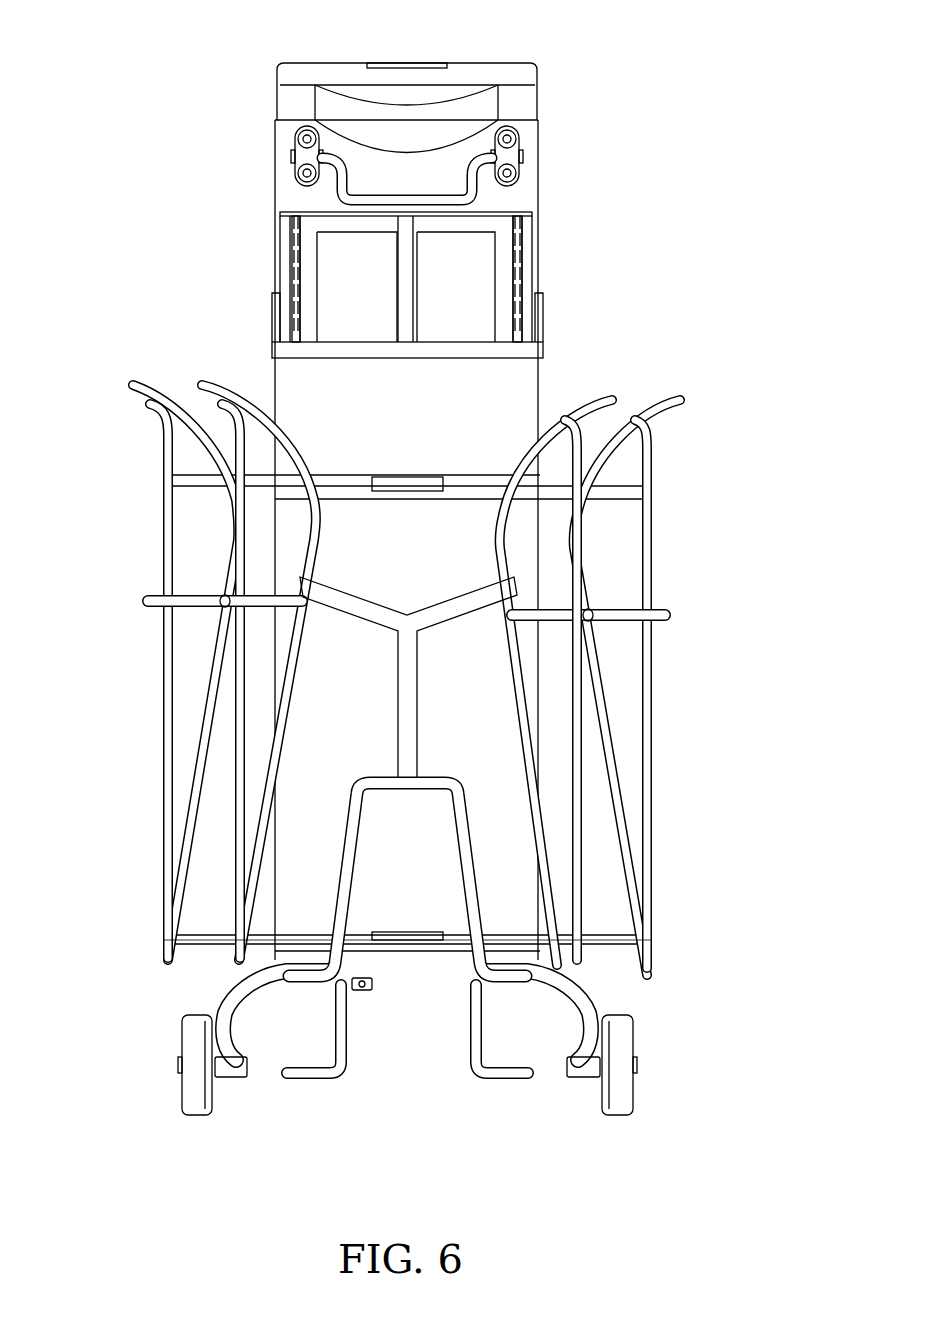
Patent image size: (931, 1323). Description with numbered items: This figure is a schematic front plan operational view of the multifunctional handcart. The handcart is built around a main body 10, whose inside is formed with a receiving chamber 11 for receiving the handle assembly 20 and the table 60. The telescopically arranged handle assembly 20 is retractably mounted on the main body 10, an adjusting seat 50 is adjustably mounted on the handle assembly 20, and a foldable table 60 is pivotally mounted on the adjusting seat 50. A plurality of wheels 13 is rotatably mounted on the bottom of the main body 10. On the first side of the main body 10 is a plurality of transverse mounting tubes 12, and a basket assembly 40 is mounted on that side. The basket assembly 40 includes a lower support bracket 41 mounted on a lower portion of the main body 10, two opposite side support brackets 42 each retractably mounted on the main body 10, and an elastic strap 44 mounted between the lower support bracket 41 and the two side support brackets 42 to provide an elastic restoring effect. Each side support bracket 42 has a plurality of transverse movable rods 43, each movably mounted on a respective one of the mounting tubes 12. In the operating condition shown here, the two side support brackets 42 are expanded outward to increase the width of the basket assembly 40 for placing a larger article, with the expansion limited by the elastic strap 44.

The main body 10 is at (556, 366).
The receiving chamber 11 is at (330, 345).
The transverse mounting tubes 12 is at (378, 940).
The wheels 13 is at (620, 1095).
The handle assembly 20 is at (266, 62).
The basket assembly 40 is at (672, 713).
The lower support bracket 41 is at (338, 882).
The side support brackets 42 is at (582, 878).
The transverse movable rods 43 is at (512, 940).
The elastic strap 44 is at (410, 690).
The adjusting seat 50 is at (548, 144).
The foldable table 60 is at (528, 258).